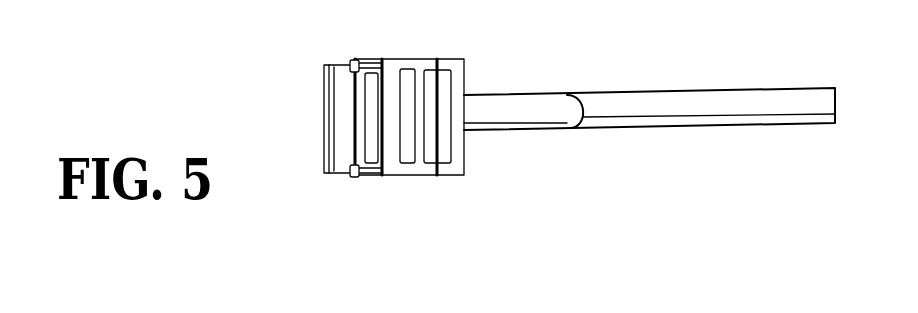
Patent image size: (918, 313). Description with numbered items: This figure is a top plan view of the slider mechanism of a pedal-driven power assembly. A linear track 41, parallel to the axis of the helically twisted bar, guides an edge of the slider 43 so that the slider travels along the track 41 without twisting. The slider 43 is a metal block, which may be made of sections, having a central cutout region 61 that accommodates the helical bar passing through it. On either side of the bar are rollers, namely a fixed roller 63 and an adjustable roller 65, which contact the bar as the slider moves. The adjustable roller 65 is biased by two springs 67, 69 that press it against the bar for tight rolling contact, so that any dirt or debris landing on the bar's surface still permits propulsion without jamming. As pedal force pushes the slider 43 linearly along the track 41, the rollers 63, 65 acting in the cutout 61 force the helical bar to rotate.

The linear track 41 is at (327, 118).
The slider 43 is at (408, 62).
The central cutout region 61 is at (409, 164).
The fixed roller 63 is at (452, 164).
The adjustable roller 65 is at (392, 166).
The spring 67 is at (370, 176).
The spring 69 is at (372, 62).